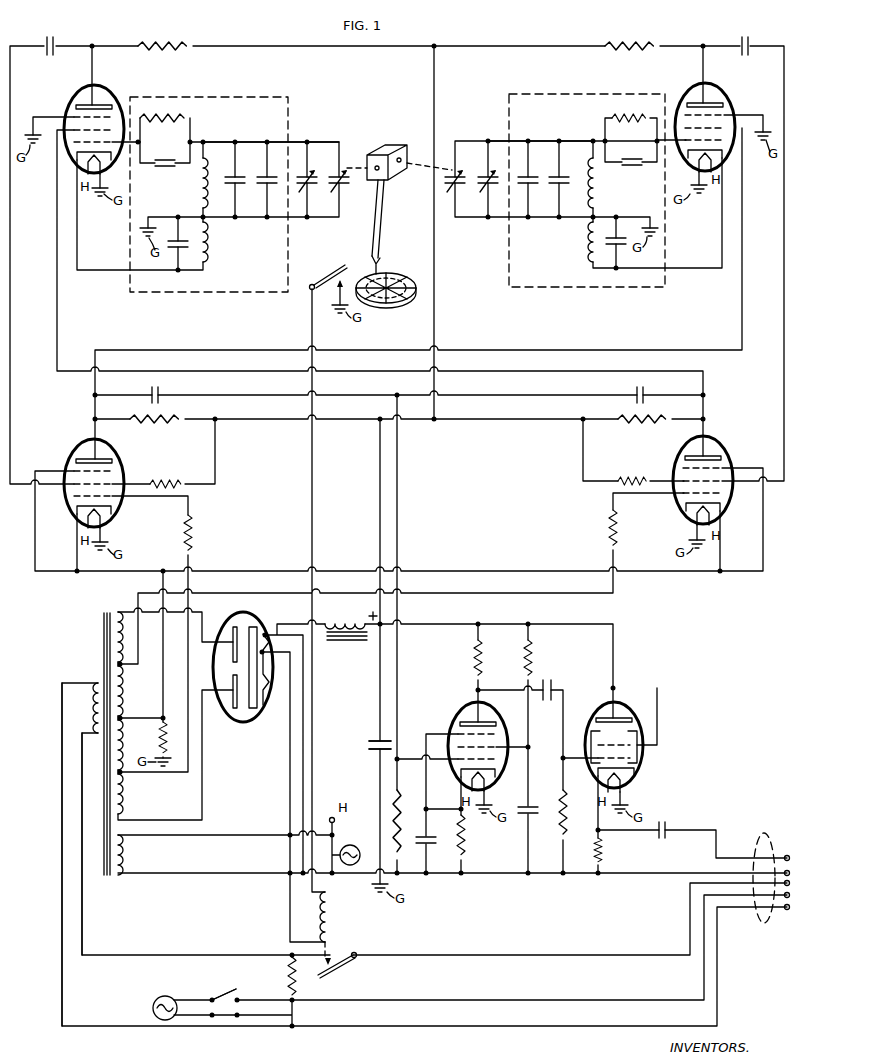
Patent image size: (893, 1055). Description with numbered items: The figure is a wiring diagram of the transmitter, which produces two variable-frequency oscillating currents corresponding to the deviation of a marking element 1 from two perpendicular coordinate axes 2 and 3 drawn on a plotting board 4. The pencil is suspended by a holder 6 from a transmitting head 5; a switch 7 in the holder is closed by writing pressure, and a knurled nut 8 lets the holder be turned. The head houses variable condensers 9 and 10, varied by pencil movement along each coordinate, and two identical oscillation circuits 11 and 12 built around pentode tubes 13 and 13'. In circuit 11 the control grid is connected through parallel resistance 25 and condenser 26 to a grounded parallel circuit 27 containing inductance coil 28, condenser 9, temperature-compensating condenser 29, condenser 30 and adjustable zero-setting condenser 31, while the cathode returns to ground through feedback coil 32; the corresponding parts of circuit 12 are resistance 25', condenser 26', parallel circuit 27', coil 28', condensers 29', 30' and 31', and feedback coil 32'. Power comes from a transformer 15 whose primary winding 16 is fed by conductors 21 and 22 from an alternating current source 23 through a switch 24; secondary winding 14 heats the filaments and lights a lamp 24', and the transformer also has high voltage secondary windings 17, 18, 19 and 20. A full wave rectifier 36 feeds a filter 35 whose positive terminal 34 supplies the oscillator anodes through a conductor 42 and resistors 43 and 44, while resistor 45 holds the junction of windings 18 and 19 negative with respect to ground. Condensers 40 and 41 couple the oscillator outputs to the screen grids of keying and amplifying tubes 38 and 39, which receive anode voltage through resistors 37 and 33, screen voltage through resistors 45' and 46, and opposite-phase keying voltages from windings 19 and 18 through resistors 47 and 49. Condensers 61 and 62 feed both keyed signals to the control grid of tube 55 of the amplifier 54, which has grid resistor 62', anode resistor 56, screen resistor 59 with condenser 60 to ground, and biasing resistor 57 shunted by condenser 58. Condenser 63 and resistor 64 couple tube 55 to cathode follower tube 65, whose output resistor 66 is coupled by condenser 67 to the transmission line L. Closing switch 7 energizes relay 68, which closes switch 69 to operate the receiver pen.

The marking element 1 is at (360, 282).
The coordinate axis 2 is at (387, 280).
The coordinate axis 3 is at (412, 281).
The plotting board 4 is at (398, 303).
The transmitting head 5 is at (385, 144).
The holder 6 is at (374, 198).
The switch 7 is at (337, 270).
The knurled nut 8 is at (374, 258).
The variable condenser 9 is at (336, 170).
The variable condenser 10 is at (486, 170).
The oscillation circuit 11 is at (121, 93).
The oscillation circuit 12 is at (677, 84).
The pentode tube 13 is at (85, 127).
The pentode tube 13' is at (711, 121).
The secondary winding 14 is at (121, 848).
The transformer 15 is at (104, 632).
The primary winding 16 is at (86, 706).
The high voltage secondary winding 17 is at (127, 628).
The high voltage secondary winding 18 is at (127, 685).
The high voltage secondary winding 19 is at (127, 731).
The high voltage secondary winding 20 is at (129, 793).
The conductor 21 is at (62, 897).
The conductor 22 is at (82, 897).
The source of alternating current 23 is at (165, 996).
The double pole-single throw switch 24 is at (229, 989).
The lamp 24' is at (360, 844).
The resistance 25 is at (167, 121).
The resistance 25' is at (621, 118).
The condenser 26 is at (165, 146).
The condenser 26' is at (631, 173).
The parallel circuit 27 is at (271, 130).
The parallel circuit 27' is at (540, 127).
The inductance coil 28 is at (191, 183).
The inductance coil 28' is at (605, 183).
The condenser 29 is at (239, 169).
The condenser 29' is at (537, 167).
The condenser 30 is at (258, 192).
The condenser 30' is at (554, 192).
The adjustable condenser 31 is at (316, 189).
The adjustable condenser 31' is at (462, 189).
The feedback coil 32 is at (188, 246).
The feedback coil 32' is at (607, 244).
The resistor 33 is at (647, 422).
The positive output terminal 34 is at (375, 634).
The filter 35 is at (345, 727).
The full wave rectifier 36 is at (240, 722).
The resistor 37 is at (163, 422).
The keying and amplifying tube 38 is at (73, 452).
The keying and amplifying tube 39 is at (723, 448).
The condenser 40 is at (50, 37).
The condenser 41 is at (744, 37).
The conductor 42 is at (436, 272).
The resistor 43 is at (159, 39).
The resistor 44 is at (627, 38).
The resistor 45 is at (172, 722).
The resistor 45' is at (169, 472).
The resistor 46 is at (618, 477).
The resistor 47 is at (191, 529).
The resistor 49 is at (616, 524).
The transmitter amplifier 54 is at (636, 651).
The tube 55 is at (453, 714).
The resistor 56 is at (471, 658).
The biasing resistor 57 is at (464, 842).
The condenser 58 is at (427, 834).
The resistor 59 is at (525, 658).
The condenser 60 is at (530, 810).
The condenser 61 is at (159, 396).
The condenser 62 is at (627, 386).
The resistor 62' is at (408, 830).
The condenser 63 is at (547, 690).
The resistor 64 is at (564, 804).
The tube 65 is at (593, 710).
The output resistor 66 is at (602, 848).
The condenser 67 is at (666, 834).
The relay 68 is at (320, 926).
The switch 69 is at (331, 972).
The transmission line L is at (765, 844).